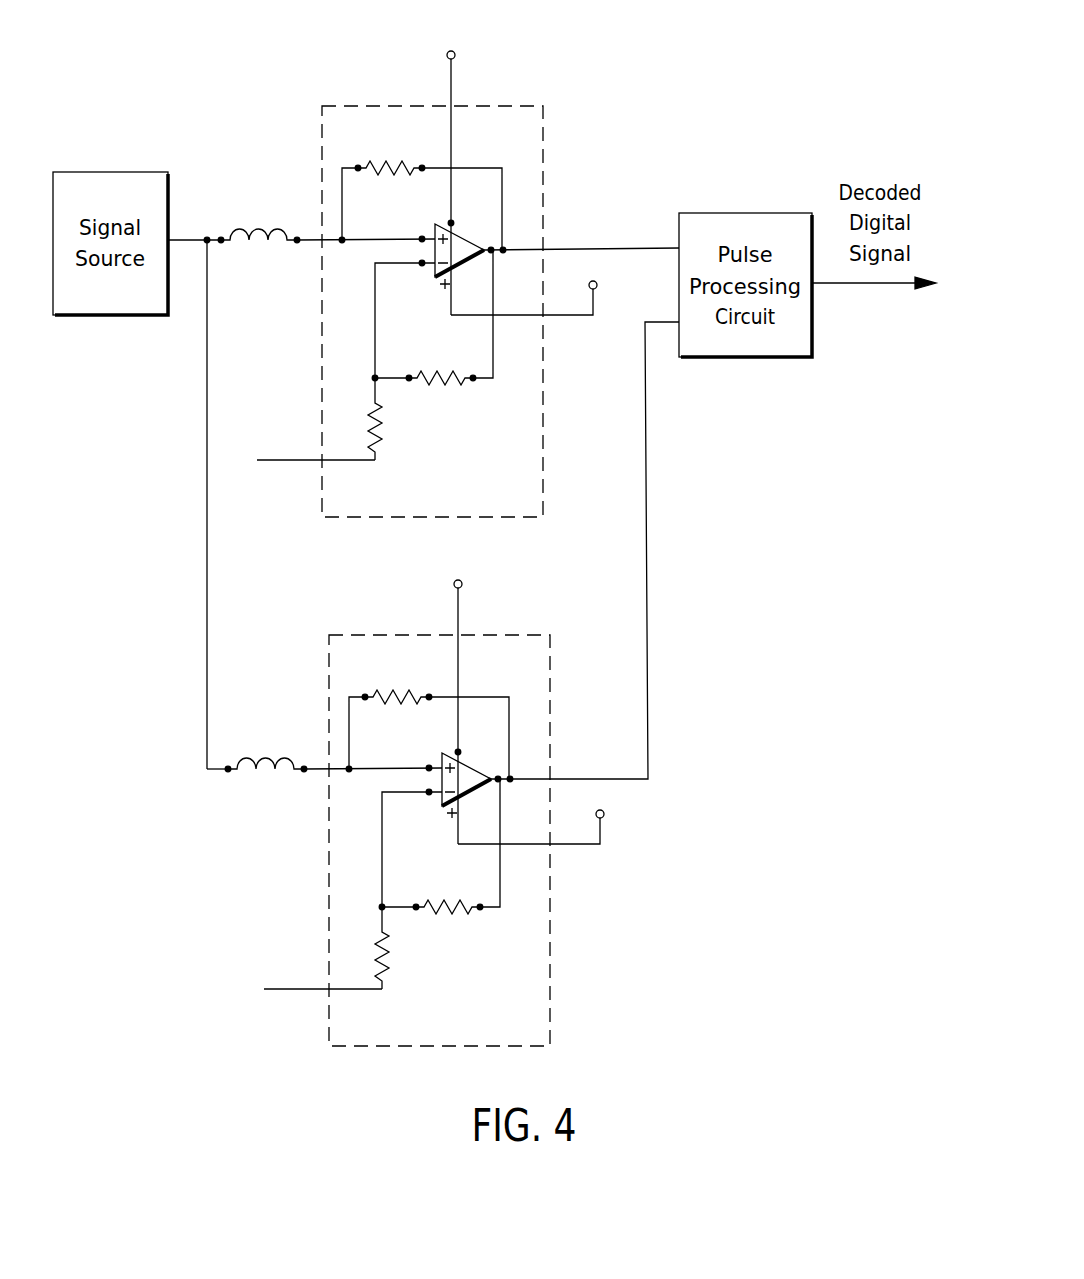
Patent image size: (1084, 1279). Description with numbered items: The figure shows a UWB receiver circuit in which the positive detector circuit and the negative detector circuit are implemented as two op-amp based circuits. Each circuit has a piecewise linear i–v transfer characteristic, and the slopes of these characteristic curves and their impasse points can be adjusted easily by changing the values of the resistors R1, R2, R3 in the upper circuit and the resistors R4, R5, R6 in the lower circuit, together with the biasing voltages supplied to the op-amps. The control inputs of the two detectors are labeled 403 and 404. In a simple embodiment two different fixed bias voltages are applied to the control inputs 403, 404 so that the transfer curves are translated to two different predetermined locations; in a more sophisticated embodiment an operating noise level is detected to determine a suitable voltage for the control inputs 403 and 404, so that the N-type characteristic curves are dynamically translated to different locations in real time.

The control input 403 is at (281, 460).
The control input 404 is at (307, 974).
The resistor R1 is at (422, 191).
The resistor R2 is at (432, 317).
The resistor R3 is at (394, 419).
The resistor R4 is at (429, 720).
The resistor R5 is at (439, 846).
The resistor R6 is at (401, 948).